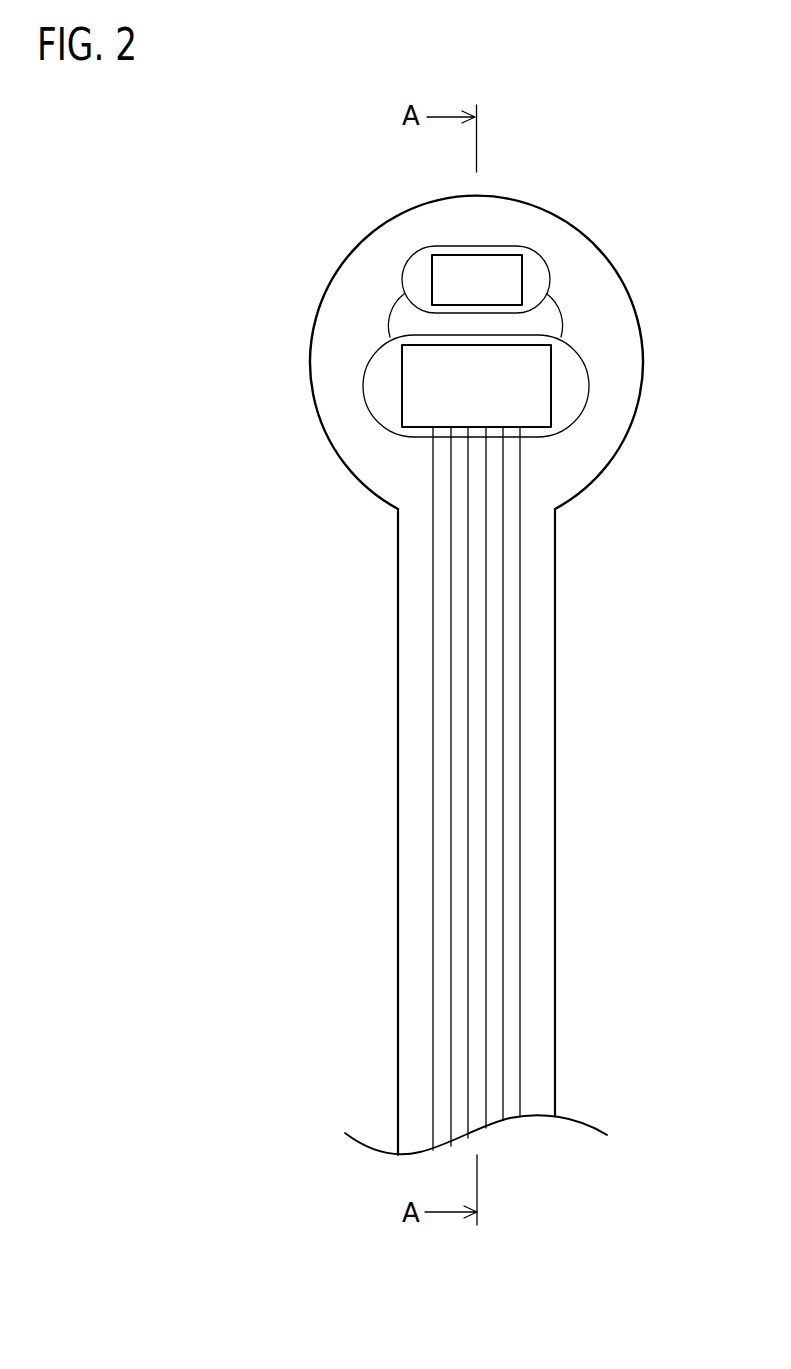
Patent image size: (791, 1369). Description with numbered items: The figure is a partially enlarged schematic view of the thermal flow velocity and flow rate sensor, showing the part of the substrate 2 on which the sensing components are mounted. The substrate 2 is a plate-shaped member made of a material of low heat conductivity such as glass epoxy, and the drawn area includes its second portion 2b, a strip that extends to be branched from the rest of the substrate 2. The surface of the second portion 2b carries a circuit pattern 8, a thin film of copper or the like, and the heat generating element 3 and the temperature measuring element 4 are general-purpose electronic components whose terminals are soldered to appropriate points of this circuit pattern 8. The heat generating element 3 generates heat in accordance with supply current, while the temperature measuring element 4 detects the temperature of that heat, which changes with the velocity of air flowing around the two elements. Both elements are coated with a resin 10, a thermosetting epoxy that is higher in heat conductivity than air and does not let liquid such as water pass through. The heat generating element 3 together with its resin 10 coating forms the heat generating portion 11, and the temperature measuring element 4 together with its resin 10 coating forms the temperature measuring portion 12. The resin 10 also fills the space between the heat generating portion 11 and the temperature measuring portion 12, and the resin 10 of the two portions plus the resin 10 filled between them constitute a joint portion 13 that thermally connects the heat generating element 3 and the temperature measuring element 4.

The substrate 2 is at (634, 239).
The second portion 2b is at (542, 804).
The heat generating element 3 is at (443, 280).
The temperature measuring element 4 is at (418, 383).
The circuit pattern 8 is at (442, 930).
The resin 10 is at (533, 277).
The heat generating portion 11 is at (403, 235).
The temperature measuring portion 12 is at (345, 408).
The joint portion 13 is at (712, 267).